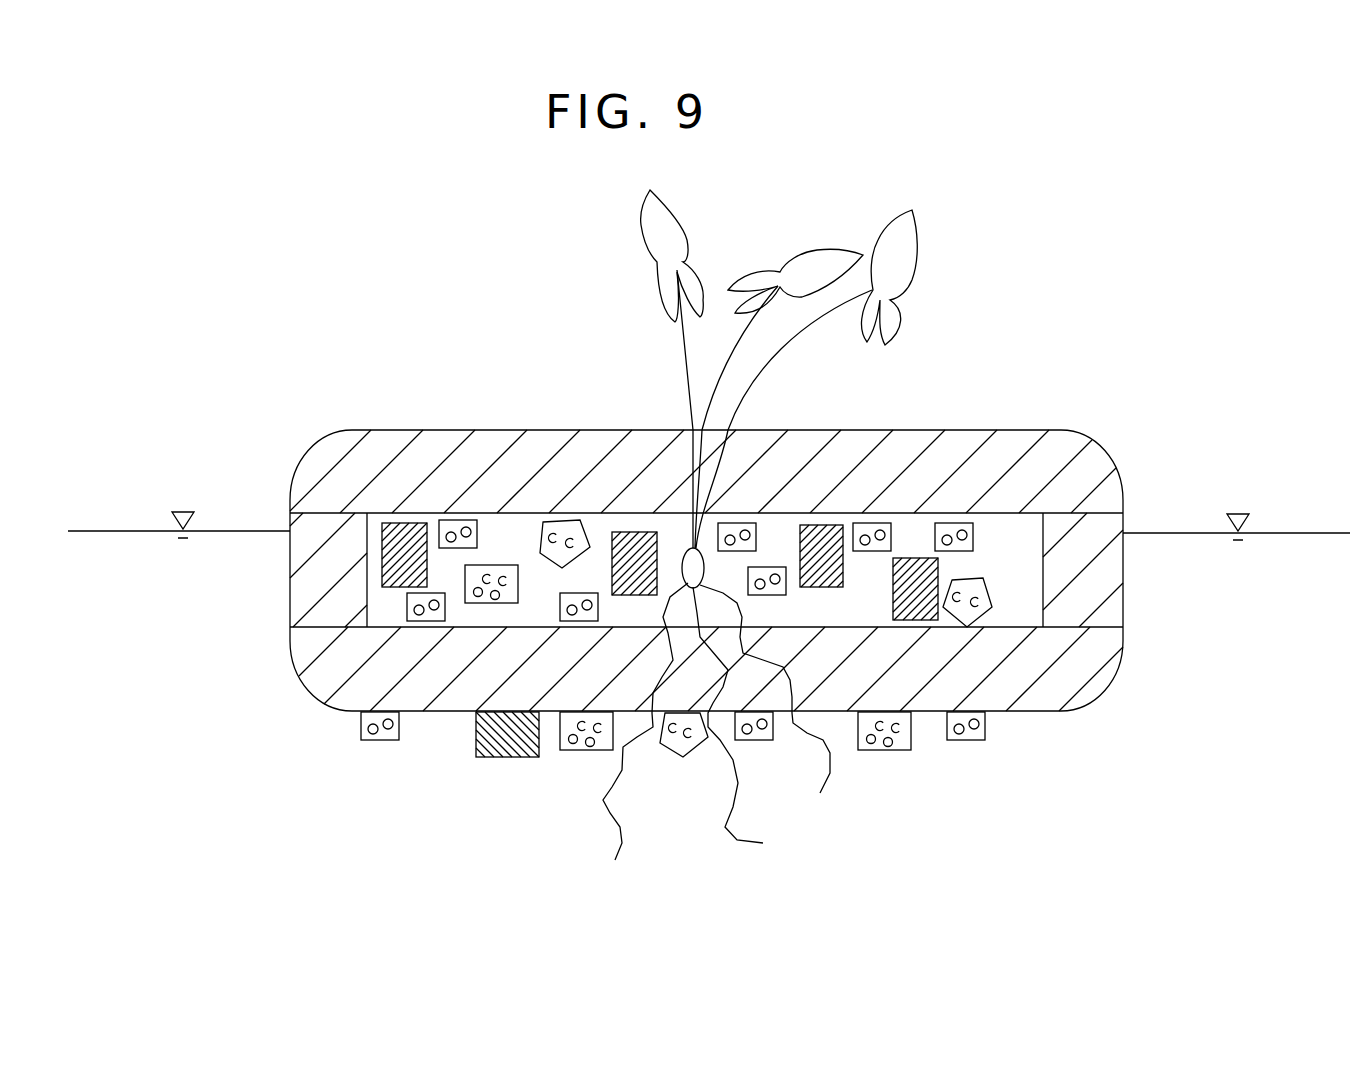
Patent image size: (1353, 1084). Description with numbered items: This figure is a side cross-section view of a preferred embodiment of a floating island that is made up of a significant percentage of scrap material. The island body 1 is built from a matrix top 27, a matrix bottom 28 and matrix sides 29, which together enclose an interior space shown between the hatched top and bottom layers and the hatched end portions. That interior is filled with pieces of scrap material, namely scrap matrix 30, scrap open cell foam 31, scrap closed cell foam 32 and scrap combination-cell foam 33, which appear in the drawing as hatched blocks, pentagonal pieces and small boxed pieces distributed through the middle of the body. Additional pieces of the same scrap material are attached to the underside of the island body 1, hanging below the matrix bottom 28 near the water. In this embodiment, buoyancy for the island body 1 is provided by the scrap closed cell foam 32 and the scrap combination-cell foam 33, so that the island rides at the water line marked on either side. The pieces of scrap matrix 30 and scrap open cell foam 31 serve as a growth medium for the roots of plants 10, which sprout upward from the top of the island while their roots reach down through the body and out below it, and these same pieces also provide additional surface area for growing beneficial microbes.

The island body 1 is at (337, 428).
The plants 10 is at (658, 233).
The matrix top 27 is at (451, 432).
The matrix bottom 28 is at (327, 677).
The matrix sides 29 is at (298, 578).
The scrap matrix 30 is at (632, 532).
The scrap open cell foam 31 is at (565, 520).
The scrap closed cell foam 32 is at (950, 525).
The scrap combination-cell foam 33 is at (510, 565).